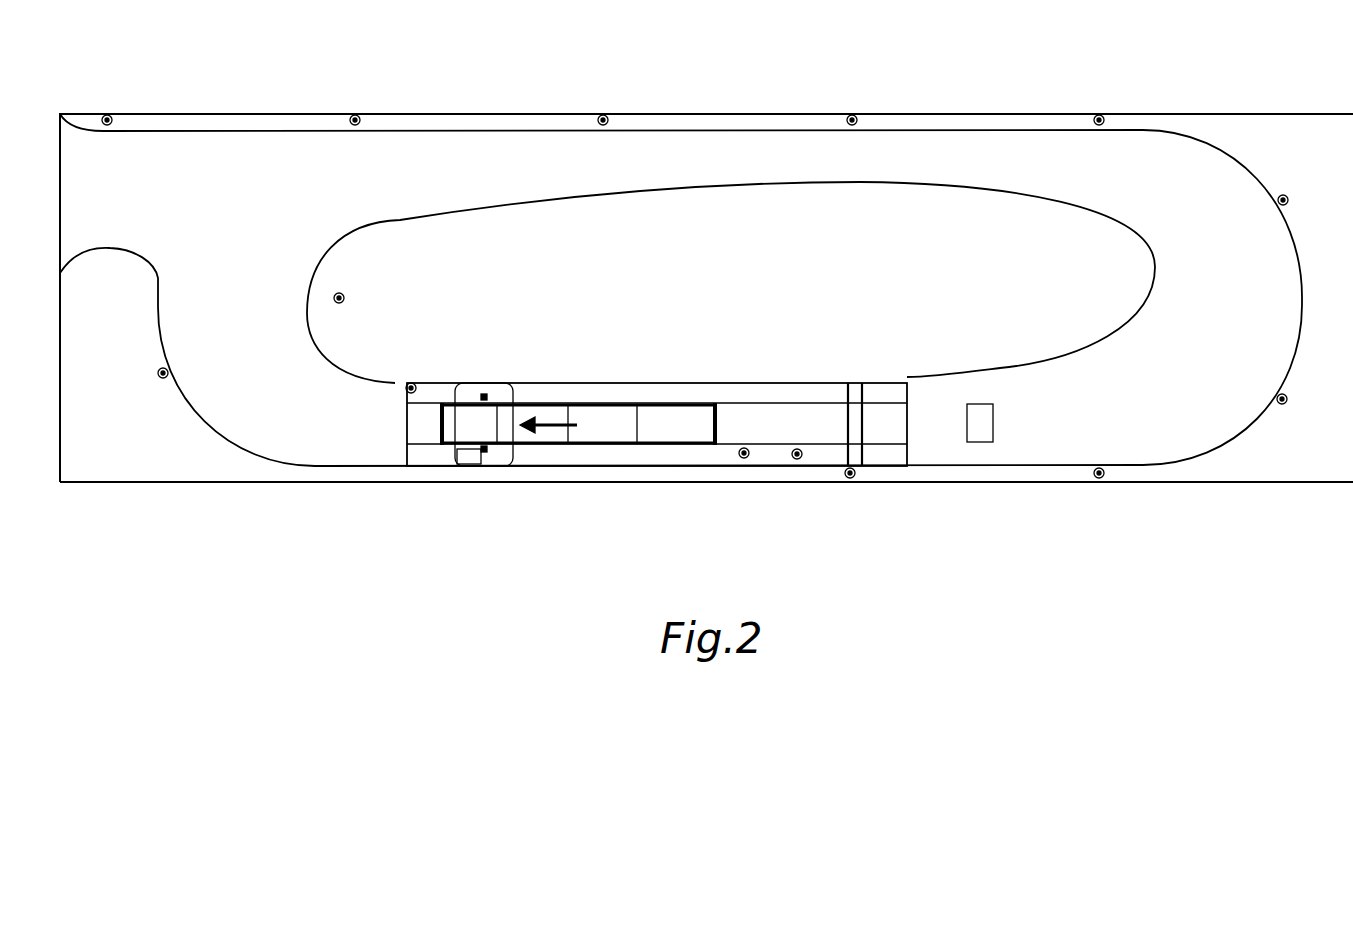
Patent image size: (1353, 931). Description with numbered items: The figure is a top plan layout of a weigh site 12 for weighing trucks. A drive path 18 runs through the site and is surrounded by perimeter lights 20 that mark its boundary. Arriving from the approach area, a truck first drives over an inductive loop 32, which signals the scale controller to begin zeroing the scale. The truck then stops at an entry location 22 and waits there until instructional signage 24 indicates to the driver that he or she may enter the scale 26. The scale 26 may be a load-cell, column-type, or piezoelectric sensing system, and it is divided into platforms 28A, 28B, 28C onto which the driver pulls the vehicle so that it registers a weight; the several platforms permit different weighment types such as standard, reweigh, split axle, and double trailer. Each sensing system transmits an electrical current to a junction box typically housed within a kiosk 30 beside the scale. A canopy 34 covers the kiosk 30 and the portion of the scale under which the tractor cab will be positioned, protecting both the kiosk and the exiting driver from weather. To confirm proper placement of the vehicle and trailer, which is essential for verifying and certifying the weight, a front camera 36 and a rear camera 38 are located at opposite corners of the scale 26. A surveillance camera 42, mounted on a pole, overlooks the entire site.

The weigh site 12 is at (480, 61).
The drive path 18 is at (724, 167).
The perimeter lights 20 is at (110, 116).
The entry location 22 is at (942, 434).
The instructional signage 24 is at (797, 461).
The scale 26 is at (657, 389).
The scale platform 28A is at (462, 410).
The scale platform 28B is at (530, 410).
The scale platform 28C is at (702, 410).
The kiosk 30 is at (470, 461).
The inductive loop 32 is at (987, 408).
The canopy 34 is at (497, 455).
The front camera 36 is at (407, 390).
The rear camera 38 is at (742, 460).
The surveillance camera 42 is at (342, 303).